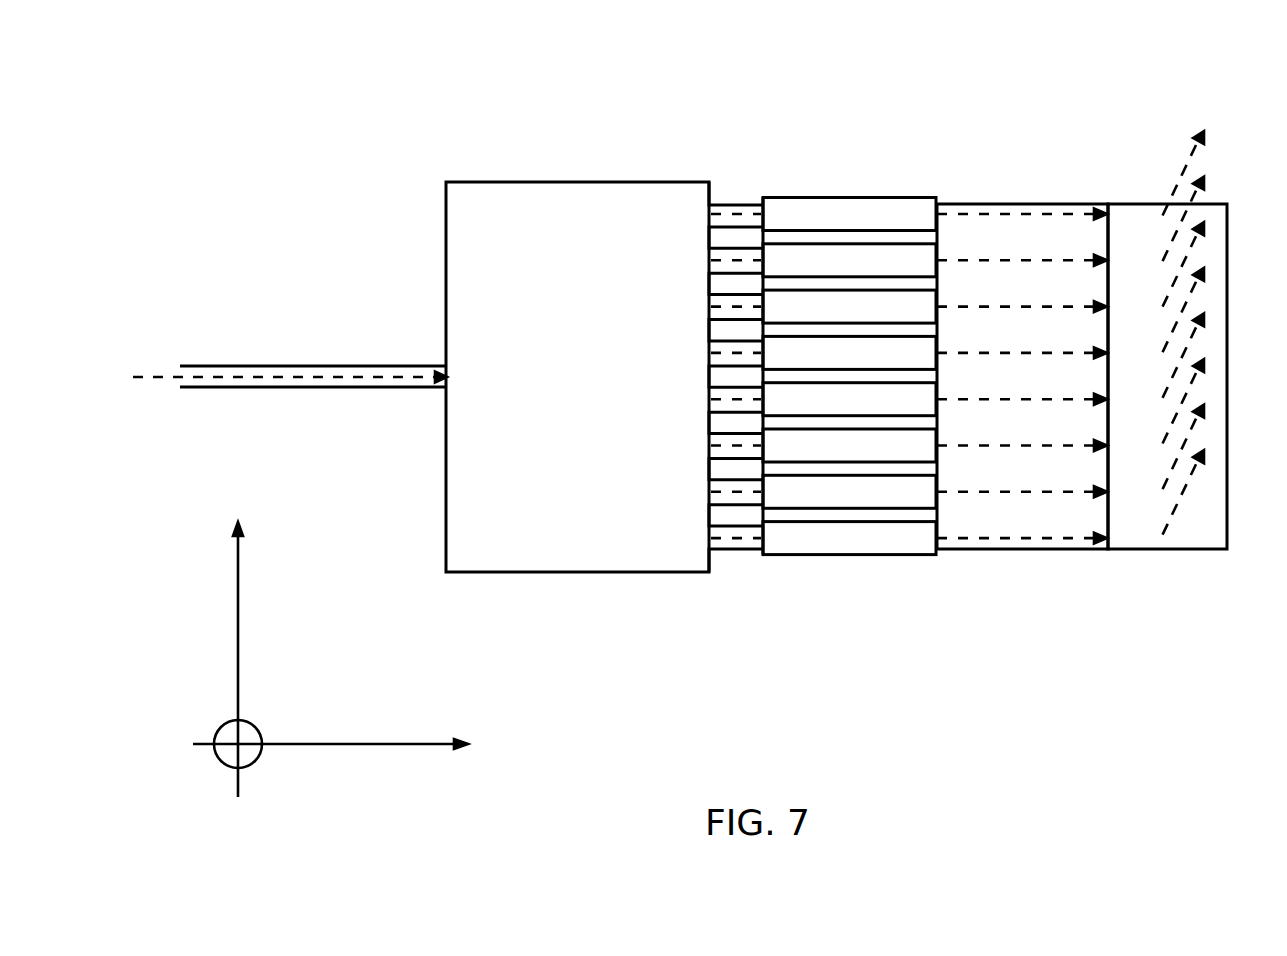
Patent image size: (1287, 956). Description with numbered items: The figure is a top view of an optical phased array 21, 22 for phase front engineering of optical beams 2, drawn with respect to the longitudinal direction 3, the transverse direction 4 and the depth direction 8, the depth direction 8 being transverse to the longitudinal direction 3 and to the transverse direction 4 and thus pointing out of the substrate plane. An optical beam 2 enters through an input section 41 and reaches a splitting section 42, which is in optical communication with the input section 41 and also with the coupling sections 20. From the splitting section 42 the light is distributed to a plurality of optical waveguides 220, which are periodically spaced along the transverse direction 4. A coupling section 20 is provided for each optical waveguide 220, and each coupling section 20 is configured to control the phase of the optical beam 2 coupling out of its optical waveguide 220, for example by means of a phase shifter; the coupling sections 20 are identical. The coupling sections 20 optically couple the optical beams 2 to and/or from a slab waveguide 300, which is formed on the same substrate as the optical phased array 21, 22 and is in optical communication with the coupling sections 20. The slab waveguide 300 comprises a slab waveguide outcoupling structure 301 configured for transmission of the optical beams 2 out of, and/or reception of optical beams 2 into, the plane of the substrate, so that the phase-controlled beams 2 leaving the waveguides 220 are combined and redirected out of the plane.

The optical beam 2 is at (135, 377).
The longitudinal direction 3 is at (438, 744).
The transverse direction 4 is at (238, 569).
The depth direction 8 is at (217, 734).
The coupling section 20 is at (826, 198).
The optical phased array 21 is at (360, 144).
The optical phased array 22 is at (360, 144).
The input section 41 is at (238, 366).
The splitting section 42 is at (555, 182).
The optical waveguide 220 is at (731, 205).
The slab waveguide 300 is at (1062, 204).
The slab waveguide outcoupling structure 301 is at (1213, 204).